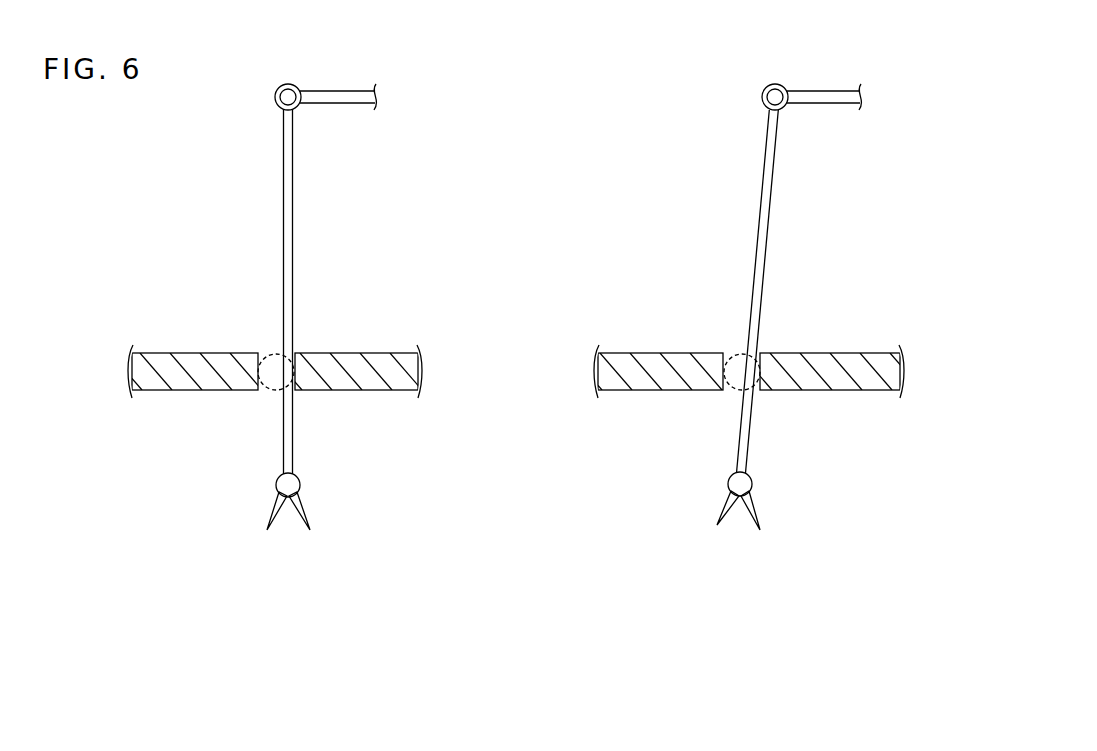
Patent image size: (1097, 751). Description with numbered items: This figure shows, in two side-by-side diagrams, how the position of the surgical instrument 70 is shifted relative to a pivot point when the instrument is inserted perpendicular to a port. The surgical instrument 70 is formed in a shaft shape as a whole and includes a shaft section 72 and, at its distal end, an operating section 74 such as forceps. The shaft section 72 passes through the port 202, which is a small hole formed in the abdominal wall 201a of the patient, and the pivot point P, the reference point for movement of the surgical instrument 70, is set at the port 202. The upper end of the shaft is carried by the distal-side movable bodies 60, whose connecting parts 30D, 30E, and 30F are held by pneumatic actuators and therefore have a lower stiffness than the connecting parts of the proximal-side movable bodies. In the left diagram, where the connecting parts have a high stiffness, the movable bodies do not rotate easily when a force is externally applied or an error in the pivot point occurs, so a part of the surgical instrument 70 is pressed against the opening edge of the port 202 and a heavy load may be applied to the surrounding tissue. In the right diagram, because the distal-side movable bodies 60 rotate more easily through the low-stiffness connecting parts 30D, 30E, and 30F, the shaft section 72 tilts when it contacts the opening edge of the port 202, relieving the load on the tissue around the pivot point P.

The connecting part 30D is at (771, 60).
The connecting part 30E is at (775, 97).
The connecting part 30F is at (765, 87).
The distal-side movable bodies 60 is at (830, 93).
The surgical instrument 70 is at (584, 307).
The shaft section 72 is at (293, 248).
The operating section 74 is at (305, 507).
The abdominal wall 201a is at (375, 353).
The port 202 is at (270, 353).
The pivot point P is at (277, 352).